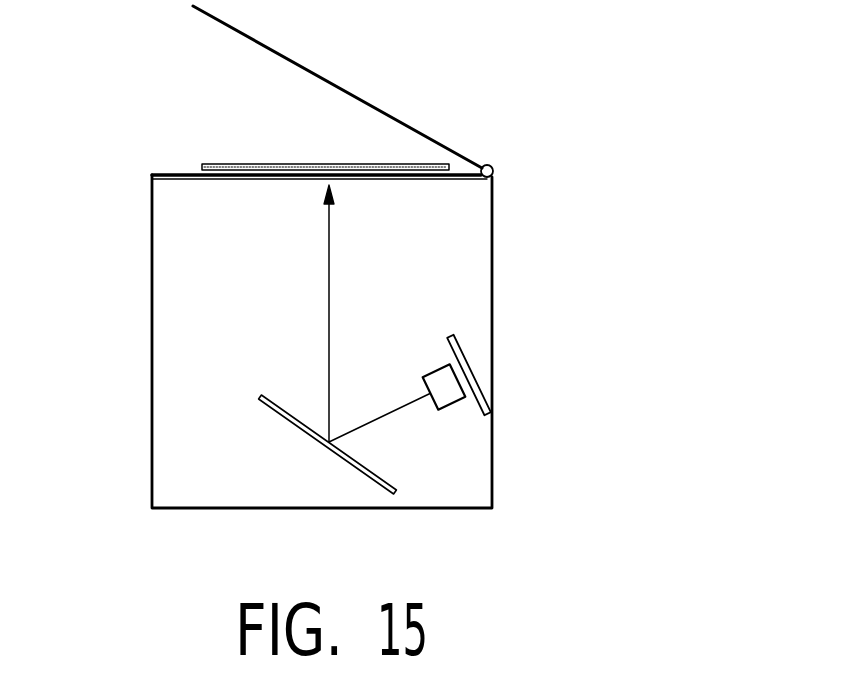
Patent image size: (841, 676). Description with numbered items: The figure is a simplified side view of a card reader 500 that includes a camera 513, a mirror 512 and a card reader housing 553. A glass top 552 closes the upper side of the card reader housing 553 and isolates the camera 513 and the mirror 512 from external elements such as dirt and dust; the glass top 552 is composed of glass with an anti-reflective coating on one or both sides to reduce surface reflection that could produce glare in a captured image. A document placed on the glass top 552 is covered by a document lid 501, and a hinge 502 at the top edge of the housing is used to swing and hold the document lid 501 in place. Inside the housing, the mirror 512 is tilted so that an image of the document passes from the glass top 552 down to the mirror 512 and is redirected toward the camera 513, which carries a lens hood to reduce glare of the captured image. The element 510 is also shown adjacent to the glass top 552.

The card reader 500 is at (652, 63).
The document lid 501 is at (365, 102).
The hinge 502 is at (489, 164).
The window plate 510 is at (287, 163).
The mirror 512 is at (357, 470).
The camera 513 is at (457, 380).
The glass top 552 is at (172, 181).
The card reader housing 553 is at (152, 348).